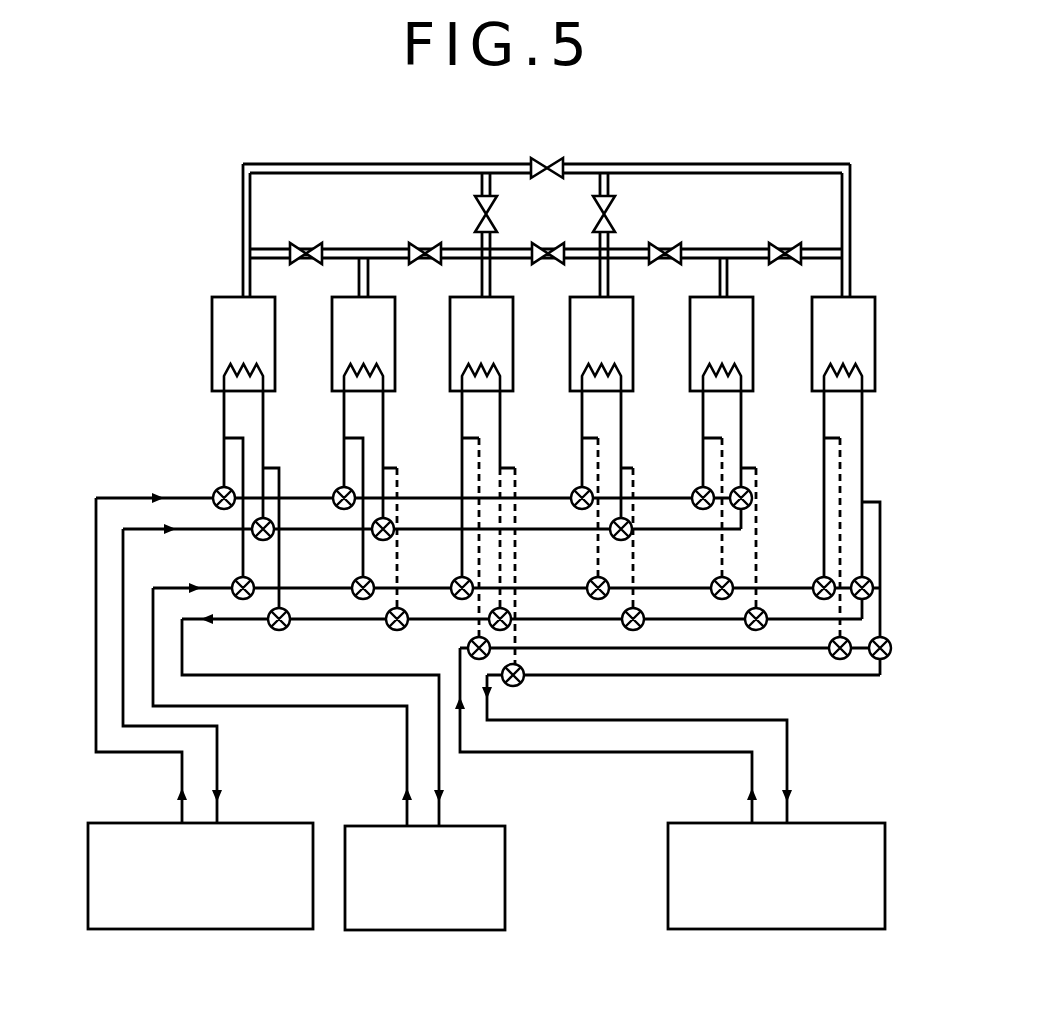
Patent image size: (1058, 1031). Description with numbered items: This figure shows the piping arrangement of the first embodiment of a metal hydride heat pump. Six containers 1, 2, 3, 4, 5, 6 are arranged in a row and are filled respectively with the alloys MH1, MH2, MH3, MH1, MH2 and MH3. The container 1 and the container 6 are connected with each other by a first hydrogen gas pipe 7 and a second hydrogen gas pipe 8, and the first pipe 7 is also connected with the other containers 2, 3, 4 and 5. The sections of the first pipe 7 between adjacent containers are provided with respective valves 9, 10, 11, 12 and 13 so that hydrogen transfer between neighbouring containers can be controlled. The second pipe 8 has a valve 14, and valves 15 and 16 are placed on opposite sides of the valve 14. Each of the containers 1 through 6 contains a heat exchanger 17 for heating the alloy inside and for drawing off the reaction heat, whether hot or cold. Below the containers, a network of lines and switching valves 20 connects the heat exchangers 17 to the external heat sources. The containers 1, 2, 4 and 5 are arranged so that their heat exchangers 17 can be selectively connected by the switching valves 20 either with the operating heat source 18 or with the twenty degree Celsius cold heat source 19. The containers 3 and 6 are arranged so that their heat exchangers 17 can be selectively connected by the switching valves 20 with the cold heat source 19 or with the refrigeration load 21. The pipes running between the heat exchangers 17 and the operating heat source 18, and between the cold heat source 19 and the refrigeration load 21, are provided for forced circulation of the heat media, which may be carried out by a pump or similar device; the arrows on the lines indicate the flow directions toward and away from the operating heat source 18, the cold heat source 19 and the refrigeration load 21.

The container 1 is at (212, 306).
The container 2 is at (332, 306).
The container 3 is at (450, 306).
The container 4 is at (570, 306).
The container 5 is at (690, 306).
The container 6 is at (812, 306).
The first hydrogen gas pipe 7 is at (623, 259).
The second hydrogen gas pipe 8 is at (458, 163).
The valve 9 is at (300, 243).
The valve 10 is at (424, 243).
The valve 11 is at (556, 245).
The valve 12 is at (676, 248).
The valve 13 is at (783, 243).
The valve 14 is at (547, 157).
The valve 15 is at (498, 213).
The valve 16 is at (616, 213).
The heat exchanger 17 is at (260, 368).
The operating heat source 18 is at (302, 929).
The cold heat source 19 is at (493, 930).
The switching valve 20 is at (214, 491).
The refrigeration load 21 is at (878, 929).